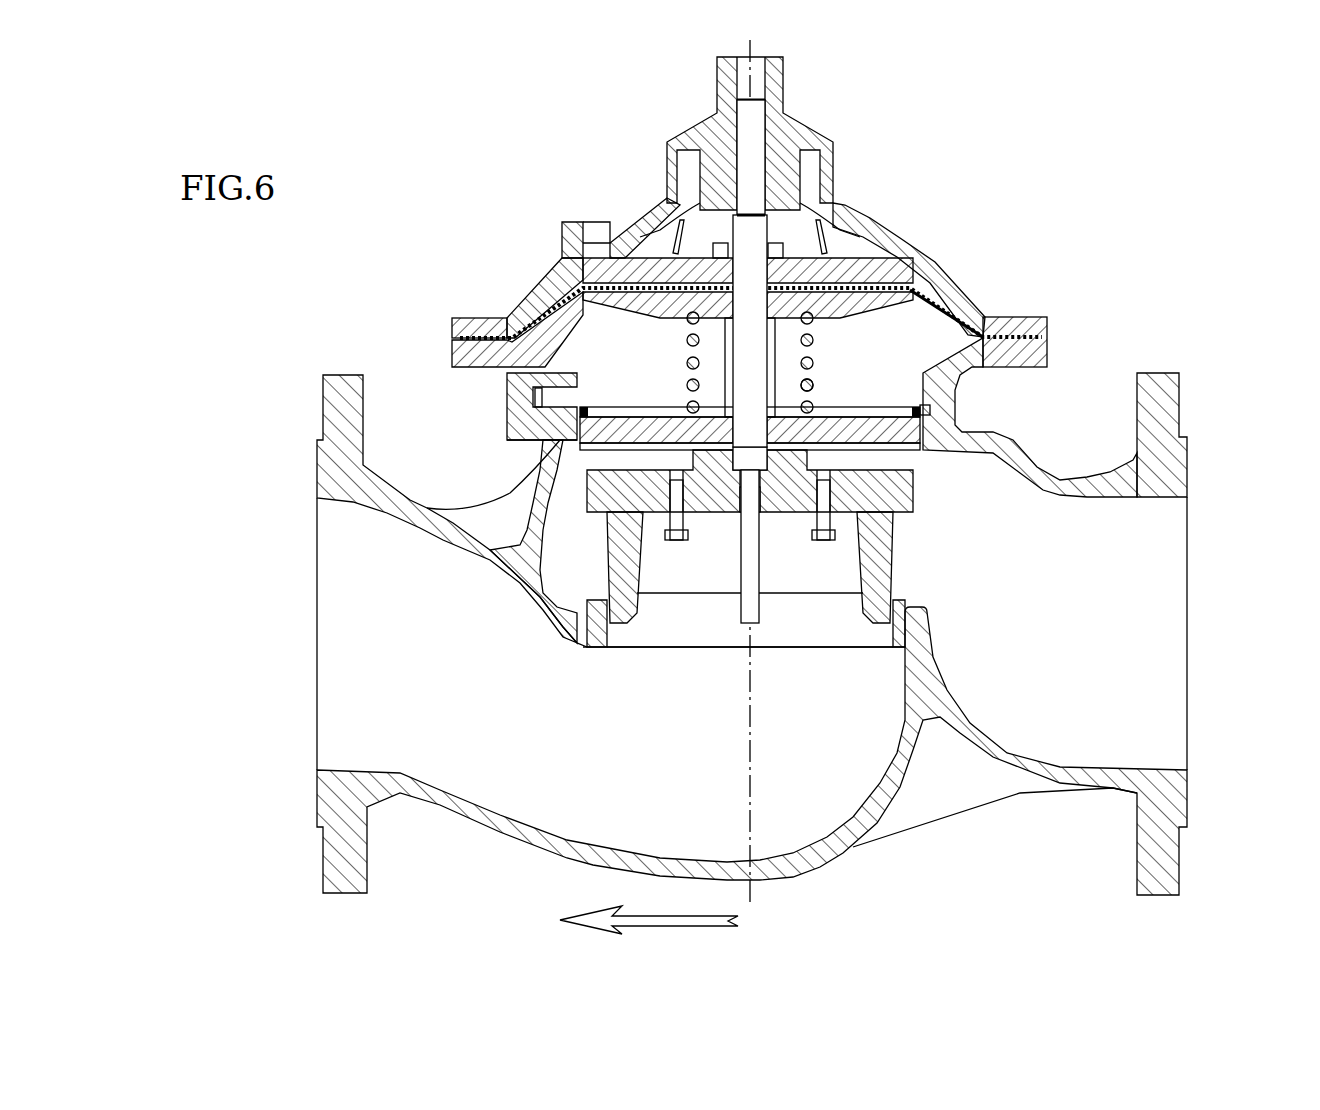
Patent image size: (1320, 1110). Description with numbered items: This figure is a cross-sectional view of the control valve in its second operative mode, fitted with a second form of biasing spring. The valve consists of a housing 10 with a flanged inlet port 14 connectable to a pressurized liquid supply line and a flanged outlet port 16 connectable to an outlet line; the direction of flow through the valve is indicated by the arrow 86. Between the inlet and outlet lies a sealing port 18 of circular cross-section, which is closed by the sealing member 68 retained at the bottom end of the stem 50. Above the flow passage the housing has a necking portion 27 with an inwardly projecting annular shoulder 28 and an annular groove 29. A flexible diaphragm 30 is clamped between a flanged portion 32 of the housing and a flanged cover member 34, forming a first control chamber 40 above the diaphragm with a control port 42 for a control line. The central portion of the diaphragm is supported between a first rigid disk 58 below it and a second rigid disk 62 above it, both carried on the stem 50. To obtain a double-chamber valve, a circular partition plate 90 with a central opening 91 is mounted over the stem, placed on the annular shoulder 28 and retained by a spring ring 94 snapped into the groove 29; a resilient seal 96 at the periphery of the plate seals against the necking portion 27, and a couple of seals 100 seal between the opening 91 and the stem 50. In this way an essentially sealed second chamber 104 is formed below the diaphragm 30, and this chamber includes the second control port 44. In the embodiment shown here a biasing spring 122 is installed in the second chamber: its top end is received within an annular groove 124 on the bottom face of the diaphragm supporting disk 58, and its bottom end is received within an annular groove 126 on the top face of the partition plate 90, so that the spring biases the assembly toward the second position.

The housing 10 is at (1122, 268).
The flanged inlet port 14 is at (305, 612).
The flanged outlet port 16 is at (1197, 612).
The sealing port 18 is at (648, 632).
The necking portion 27 is at (860, 416).
The inwardly projecting annular shoulder 28 is at (586, 462).
The annular groove 29 is at (925, 405).
The flexible diaphragm 30 is at (540, 312).
The flanged portion 32 is at (1017, 368).
The flanged cover member 34 is at (947, 278).
The first control chamber 40 is at (705, 228).
The control port 42 is at (597, 238).
The second control port 44 is at (545, 438).
The stem 50 is at (814, 360).
The first rigid disk 58 is at (462, 350).
The second rigid disk 62 is at (600, 270).
The sealing member 68 is at (722, 502).
The flow direction arrow 86 is at (740, 922).
The circular partition plate 90 is at (555, 447).
The central opening 91 is at (814, 384).
The spring ring 94 is at (585, 413).
The resilient seal 96 is at (940, 456).
The seals 100 is at (690, 420).
The second chamber 104 is at (515, 395).
The biasing spring 122 is at (812, 341).
The annular groove 124 is at (870, 290).
The annular groove 126 is at (915, 472).